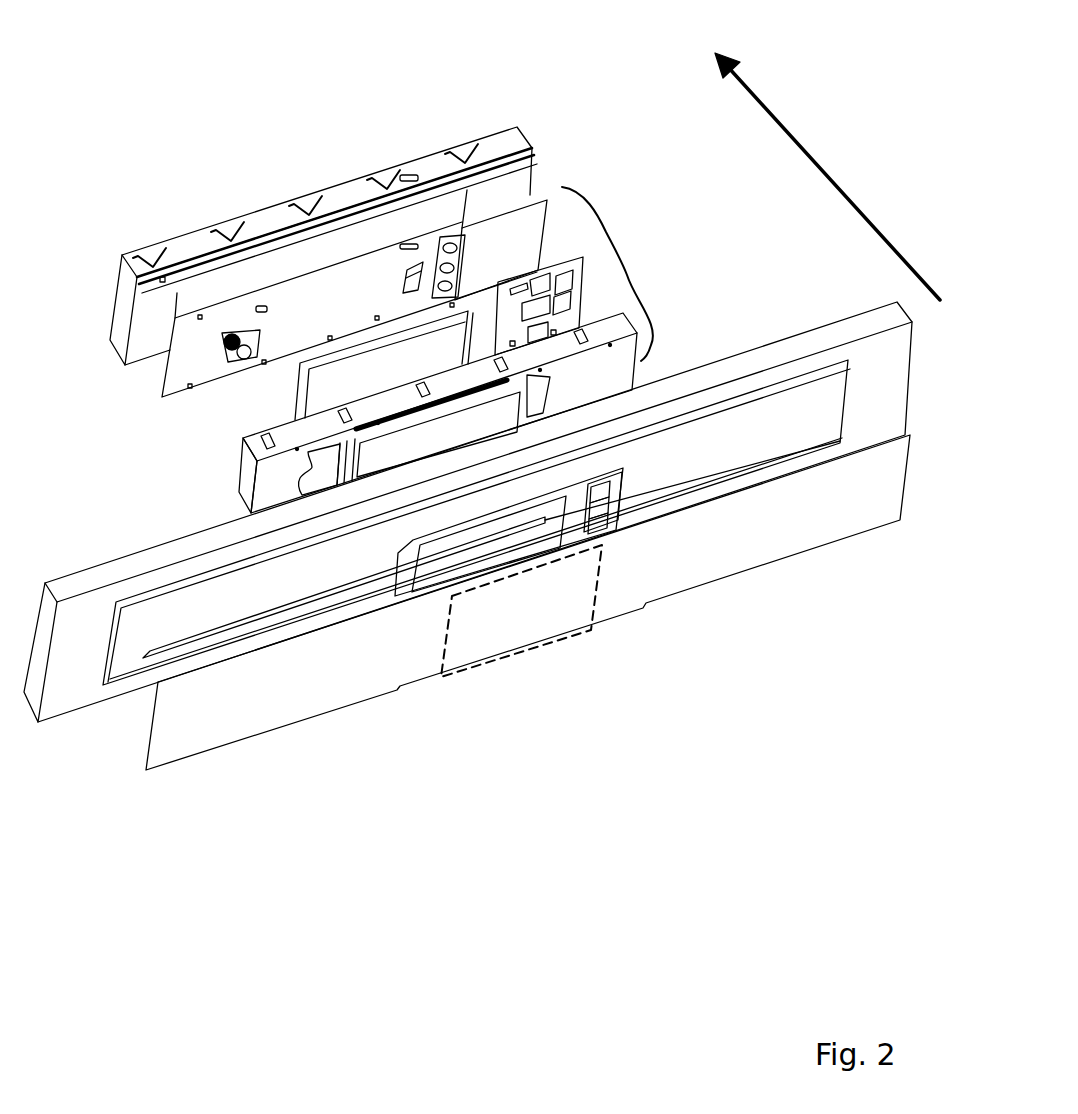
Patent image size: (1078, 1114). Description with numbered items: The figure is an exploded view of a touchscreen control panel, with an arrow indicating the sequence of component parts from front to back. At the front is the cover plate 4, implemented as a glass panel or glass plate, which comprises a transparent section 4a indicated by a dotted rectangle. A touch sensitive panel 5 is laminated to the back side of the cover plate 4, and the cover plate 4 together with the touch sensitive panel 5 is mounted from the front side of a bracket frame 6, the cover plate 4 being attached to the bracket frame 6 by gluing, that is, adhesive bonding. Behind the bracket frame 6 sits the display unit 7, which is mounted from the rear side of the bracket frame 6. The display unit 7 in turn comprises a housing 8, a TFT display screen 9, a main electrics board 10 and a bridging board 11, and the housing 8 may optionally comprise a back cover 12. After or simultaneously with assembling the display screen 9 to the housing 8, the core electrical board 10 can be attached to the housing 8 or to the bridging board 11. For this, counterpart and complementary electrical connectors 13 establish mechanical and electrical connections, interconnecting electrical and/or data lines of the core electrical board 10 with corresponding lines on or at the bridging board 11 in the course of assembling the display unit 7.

The cover plate 4 is at (338, 692).
The transparent section 4a is at (570, 617).
The touch sensitive panel 5 is at (515, 537).
The bracket frame 6 is at (80, 702).
The display unit 7 is at (452, 373).
The housing 8 is at (247, 479).
The TFT display screen 9 is at (298, 392).
The main electrics board 10 is at (549, 264).
The bridging board 11 is at (162, 381).
The back cover 12 is at (502, 152).
The electrical connectors 13 is at (451, 244).